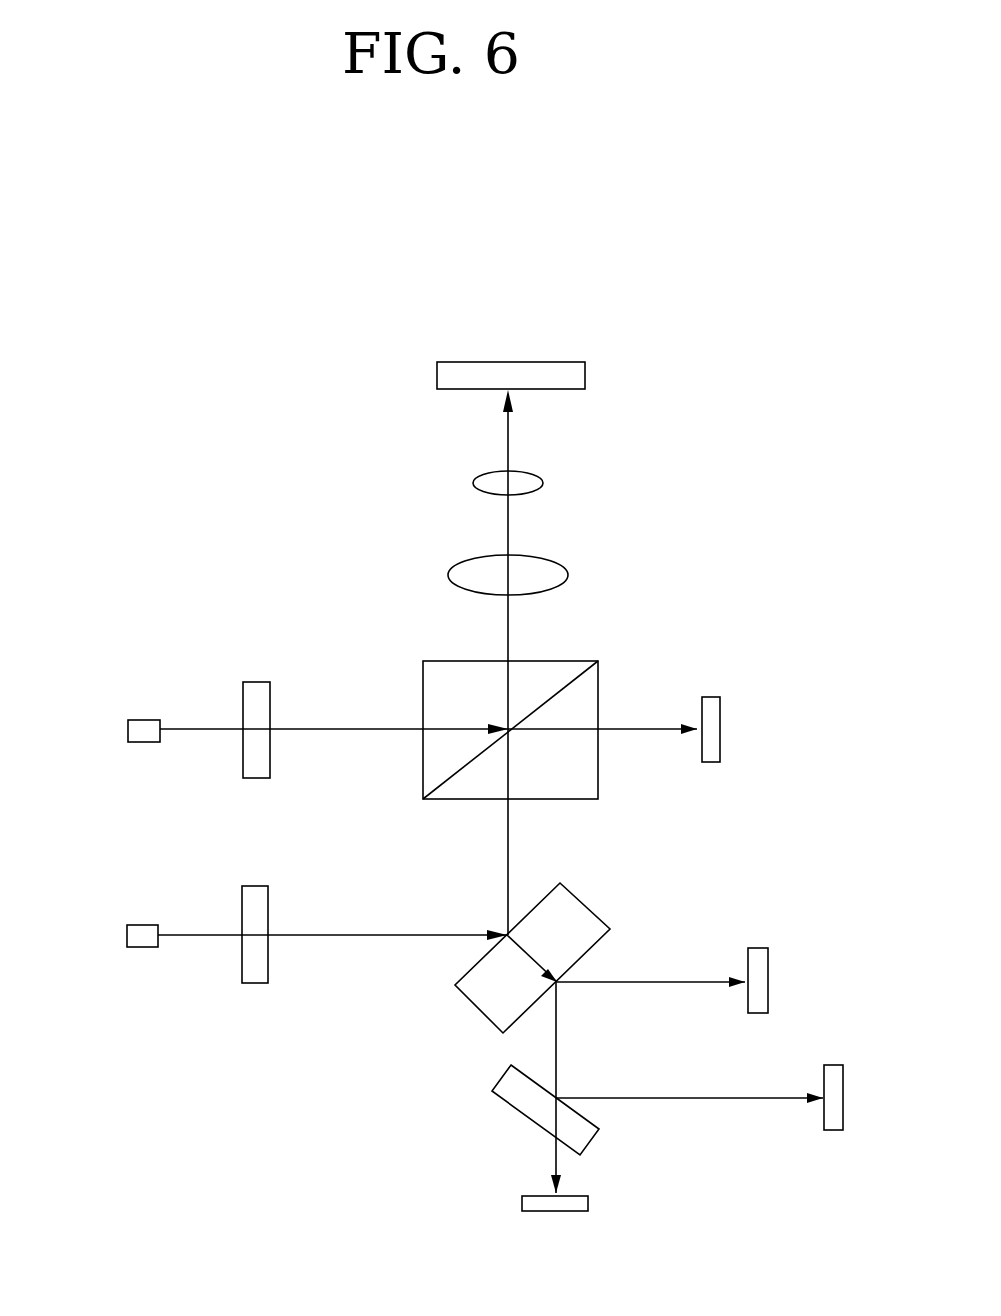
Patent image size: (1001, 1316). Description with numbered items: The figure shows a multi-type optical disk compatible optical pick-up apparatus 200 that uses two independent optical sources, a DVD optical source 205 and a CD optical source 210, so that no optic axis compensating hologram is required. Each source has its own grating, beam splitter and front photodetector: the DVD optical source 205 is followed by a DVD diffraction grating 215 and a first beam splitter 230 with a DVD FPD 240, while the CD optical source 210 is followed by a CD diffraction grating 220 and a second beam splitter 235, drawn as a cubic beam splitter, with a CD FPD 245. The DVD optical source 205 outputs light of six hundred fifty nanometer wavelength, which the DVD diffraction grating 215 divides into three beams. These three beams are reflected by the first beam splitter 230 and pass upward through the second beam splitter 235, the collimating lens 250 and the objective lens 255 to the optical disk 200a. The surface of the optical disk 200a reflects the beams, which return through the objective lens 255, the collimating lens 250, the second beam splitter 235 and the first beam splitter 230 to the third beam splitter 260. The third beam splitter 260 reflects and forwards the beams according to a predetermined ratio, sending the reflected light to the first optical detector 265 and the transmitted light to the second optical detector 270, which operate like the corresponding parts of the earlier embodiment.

The multi-type optical disk compatible optical pick-up apparatus 200 is at (780, 332).
The optical disk 200a is at (585, 375).
The DVD optical source 205 is at (140, 922).
The CD optical source 210 is at (142, 718).
The DVD diffraction grating 215 is at (253, 884).
The CD diffraction grating 220 is at (255, 680).
The first beam splitter 230 is at (586, 904).
The second beam splitter 235 is at (597, 660).
The DVD FPD 240 is at (757, 946).
The CD FPD 245 is at (710, 695).
The collimating lens 250 is at (568, 577).
The objective lens 255 is at (543, 483).
The third beam splitter 260 is at (596, 1131).
The first optical detector 265 is at (833, 1063).
The second optical detector 270 is at (588, 1203).